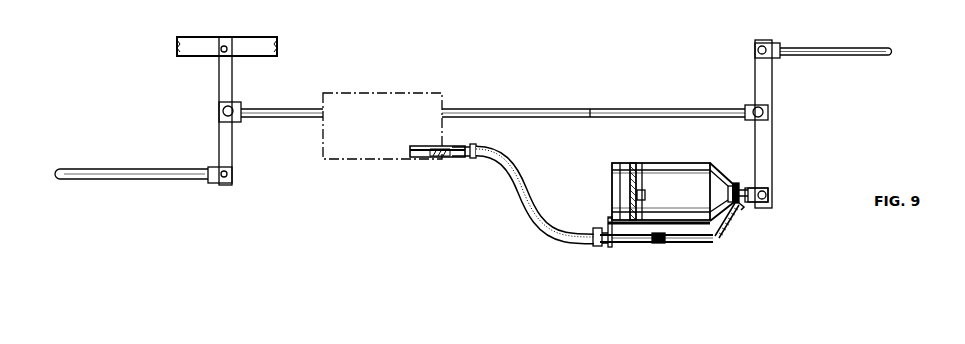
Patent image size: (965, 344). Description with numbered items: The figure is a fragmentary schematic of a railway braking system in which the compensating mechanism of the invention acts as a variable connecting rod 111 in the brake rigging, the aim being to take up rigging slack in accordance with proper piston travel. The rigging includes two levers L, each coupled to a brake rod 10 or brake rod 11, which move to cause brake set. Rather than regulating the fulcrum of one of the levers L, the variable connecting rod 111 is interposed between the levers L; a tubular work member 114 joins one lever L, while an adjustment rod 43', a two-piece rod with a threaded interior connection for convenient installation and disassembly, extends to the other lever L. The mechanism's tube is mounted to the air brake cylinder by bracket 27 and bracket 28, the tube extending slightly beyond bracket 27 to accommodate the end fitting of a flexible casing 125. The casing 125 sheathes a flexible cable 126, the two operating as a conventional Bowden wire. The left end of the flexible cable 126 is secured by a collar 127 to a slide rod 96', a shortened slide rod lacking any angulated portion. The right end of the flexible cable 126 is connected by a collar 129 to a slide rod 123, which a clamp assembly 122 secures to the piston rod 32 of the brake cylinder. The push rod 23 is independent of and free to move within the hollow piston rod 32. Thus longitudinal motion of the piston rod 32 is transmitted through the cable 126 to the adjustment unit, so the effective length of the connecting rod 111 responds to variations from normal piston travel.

The lever L is at (228, 94).
The brake rod 10 is at (148, 172).
The brake rod 11 is at (843, 58).
The tubular work member 114 is at (275, 112).
The variable connecting rod 111 is at (398, 107).
The adjustment rod 43' is at (593, 102).
The slide rod 96' is at (428, 174).
The collar 127 is at (433, 159).
The flexible cable 126 is at (450, 151).
The flexible casing 125 is at (516, 182).
The bracket 27 is at (610, 246).
The bracket 28 is at (713, 238).
The collar 129 is at (660, 233).
The slide rod 123 is at (729, 214).
The clamp assembly 122 is at (742, 207).
The piston rod 32 is at (731, 185).
The push rod 23 is at (741, 188).